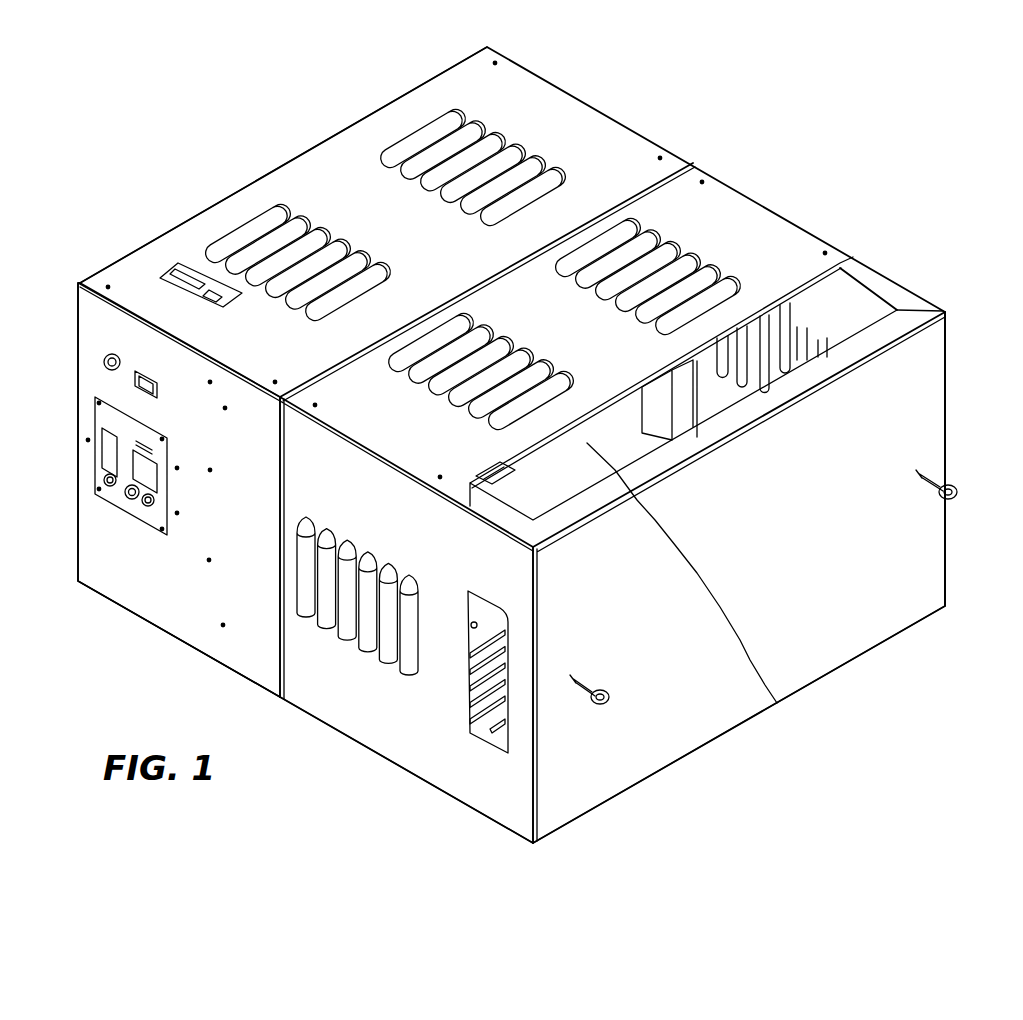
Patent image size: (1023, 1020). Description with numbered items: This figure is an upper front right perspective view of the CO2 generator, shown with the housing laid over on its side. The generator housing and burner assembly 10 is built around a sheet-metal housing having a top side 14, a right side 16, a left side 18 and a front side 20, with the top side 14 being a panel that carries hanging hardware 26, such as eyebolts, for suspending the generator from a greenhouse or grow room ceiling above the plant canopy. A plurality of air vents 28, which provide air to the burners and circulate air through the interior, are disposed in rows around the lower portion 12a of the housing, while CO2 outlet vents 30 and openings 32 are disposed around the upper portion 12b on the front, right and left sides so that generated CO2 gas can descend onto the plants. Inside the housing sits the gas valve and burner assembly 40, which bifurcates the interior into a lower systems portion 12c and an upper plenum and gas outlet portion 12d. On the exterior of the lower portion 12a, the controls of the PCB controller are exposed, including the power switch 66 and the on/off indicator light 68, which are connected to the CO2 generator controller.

The generator housing and burner assembly 10 is at (869, 103).
The lower portion of the housing 12a is at (95, 505).
The upper portion of the housing 12b is at (475, 785).
The lower systems portion 12c is at (374, 110).
The upper plenum and gas outlet portion 12d is at (626, 416).
The top side 14 is at (850, 572).
The right side 16 is at (130, 594).
The left side 18 is at (944, 311).
The front side 20 is at (304, 160).
The hanging hardware 26 is at (615, 705).
The air vents 28 is at (229, 248).
The CO2 outlet vents 30 is at (688, 255).
The openings 32 is at (852, 308).
The gas valve and burner assembly 40 is at (777, 703).
The power switch 66 is at (138, 382).
The on/off indicator light 68 is at (100, 360).